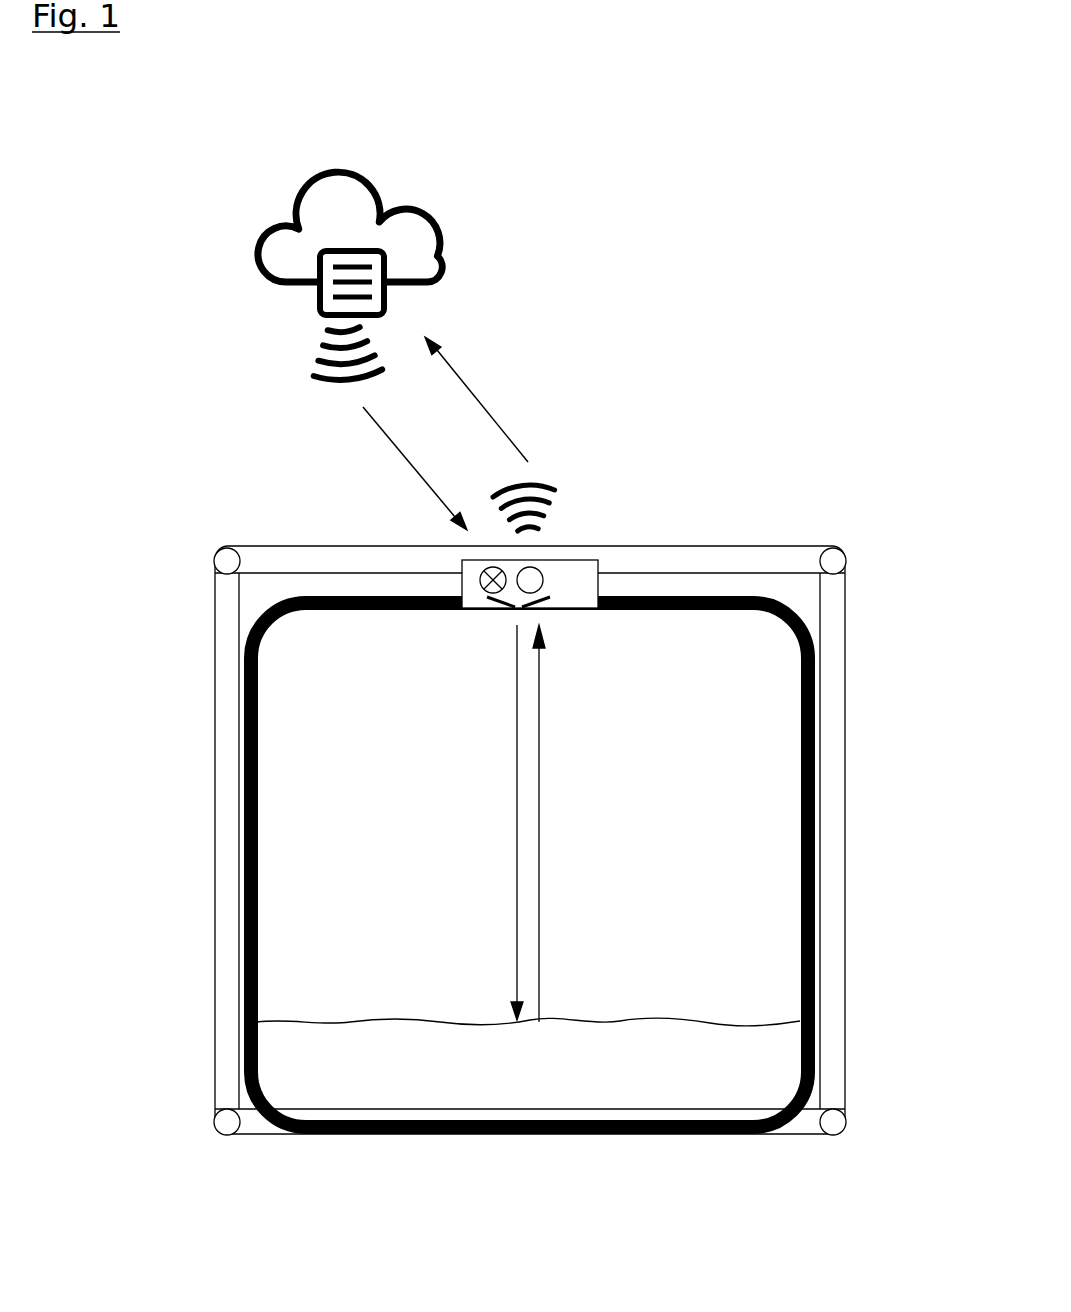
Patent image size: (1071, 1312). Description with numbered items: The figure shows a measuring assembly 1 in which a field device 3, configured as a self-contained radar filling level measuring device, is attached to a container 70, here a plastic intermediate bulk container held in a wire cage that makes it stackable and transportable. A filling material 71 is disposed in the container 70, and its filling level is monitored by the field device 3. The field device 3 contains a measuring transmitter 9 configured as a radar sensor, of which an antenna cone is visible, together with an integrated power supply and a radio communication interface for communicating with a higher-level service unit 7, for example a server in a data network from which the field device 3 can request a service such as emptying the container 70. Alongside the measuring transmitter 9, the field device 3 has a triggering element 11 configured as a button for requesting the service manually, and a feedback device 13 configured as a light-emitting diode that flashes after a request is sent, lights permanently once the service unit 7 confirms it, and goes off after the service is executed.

The measuring assembly 1 is at (798, 104).
The field device 3 is at (521, 585).
The service unit 7 is at (385, 300).
The measuring transmitter 9 is at (517, 607).
The triggering element 11 is at (533, 585).
The feedback device 13 is at (490, 585).
The container 70 is at (808, 865).
The filling material 71 is at (375, 1085).